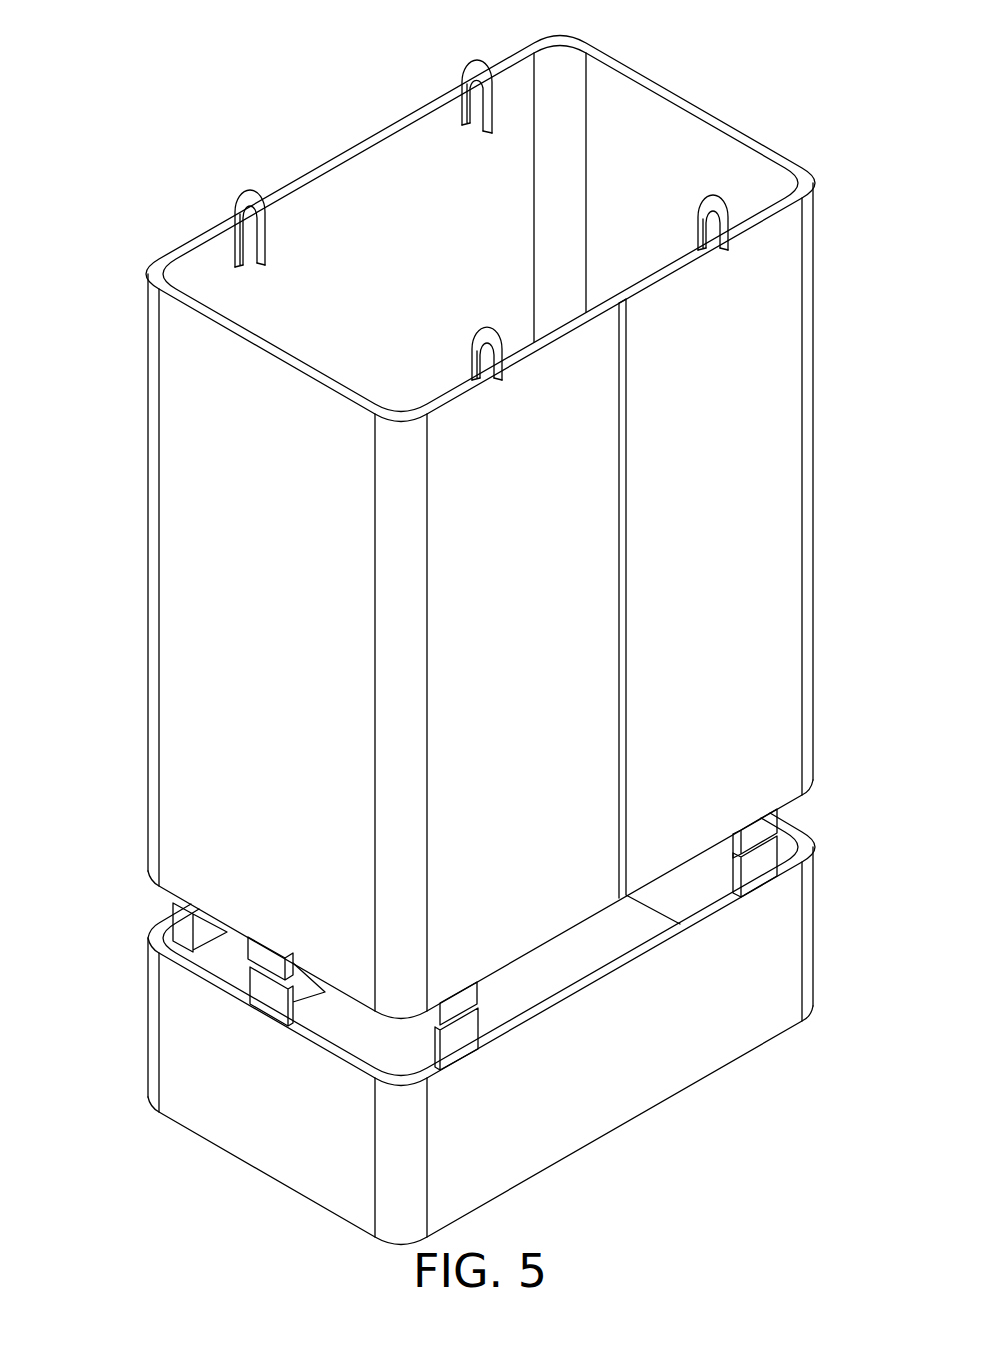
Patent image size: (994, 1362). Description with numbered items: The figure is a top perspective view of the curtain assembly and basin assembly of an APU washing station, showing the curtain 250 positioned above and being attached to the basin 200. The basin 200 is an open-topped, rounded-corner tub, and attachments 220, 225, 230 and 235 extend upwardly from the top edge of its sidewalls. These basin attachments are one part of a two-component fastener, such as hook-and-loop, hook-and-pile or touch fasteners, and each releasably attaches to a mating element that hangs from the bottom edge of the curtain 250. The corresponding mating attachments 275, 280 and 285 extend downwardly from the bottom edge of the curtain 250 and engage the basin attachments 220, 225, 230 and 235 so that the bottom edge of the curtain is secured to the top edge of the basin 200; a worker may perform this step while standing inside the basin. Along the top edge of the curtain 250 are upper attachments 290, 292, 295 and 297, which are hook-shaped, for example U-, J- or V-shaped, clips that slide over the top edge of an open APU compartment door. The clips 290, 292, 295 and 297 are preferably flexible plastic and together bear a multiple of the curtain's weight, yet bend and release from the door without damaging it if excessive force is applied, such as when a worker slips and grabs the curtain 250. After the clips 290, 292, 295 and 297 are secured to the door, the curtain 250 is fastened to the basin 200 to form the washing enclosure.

The basin 200 is at (255, 1118).
The attachment 220 is at (757, 858).
The attachment 225 is at (463, 1033).
The attachment 230 is at (270, 993).
The attachment 235 is at (183, 915).
The curtain 250 is at (237, 676).
The attachment 275 is at (757, 827).
The attachment 280 is at (453, 1002).
The attachment 285 is at (267, 962).
The upper attachment clip 290 is at (706, 207).
The upper attachment clip 292 is at (477, 62).
The upper attachment clip 295 is at (477, 335).
The upper attachment clip 297 is at (245, 202).